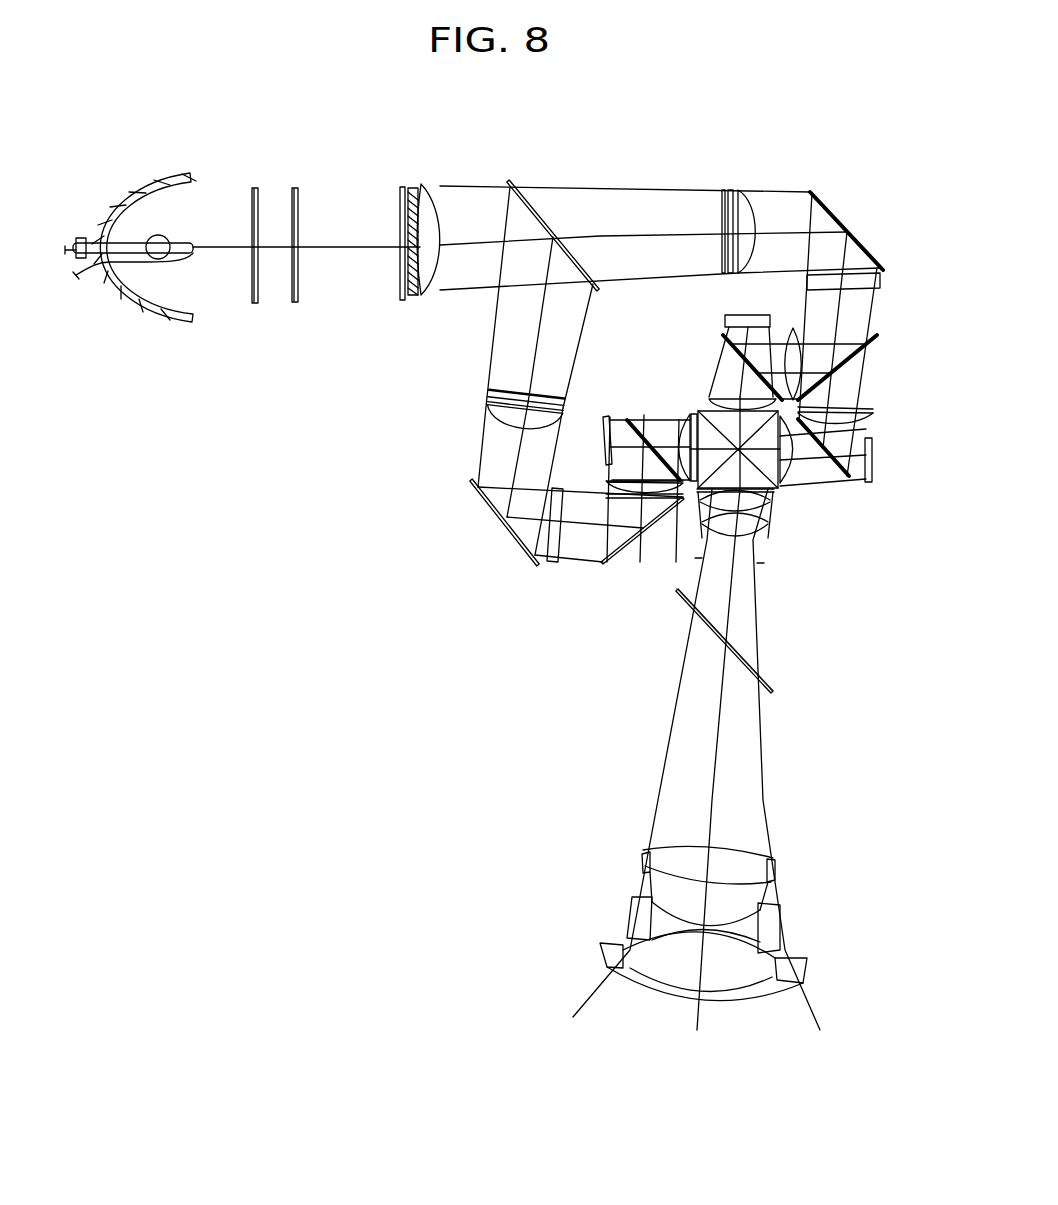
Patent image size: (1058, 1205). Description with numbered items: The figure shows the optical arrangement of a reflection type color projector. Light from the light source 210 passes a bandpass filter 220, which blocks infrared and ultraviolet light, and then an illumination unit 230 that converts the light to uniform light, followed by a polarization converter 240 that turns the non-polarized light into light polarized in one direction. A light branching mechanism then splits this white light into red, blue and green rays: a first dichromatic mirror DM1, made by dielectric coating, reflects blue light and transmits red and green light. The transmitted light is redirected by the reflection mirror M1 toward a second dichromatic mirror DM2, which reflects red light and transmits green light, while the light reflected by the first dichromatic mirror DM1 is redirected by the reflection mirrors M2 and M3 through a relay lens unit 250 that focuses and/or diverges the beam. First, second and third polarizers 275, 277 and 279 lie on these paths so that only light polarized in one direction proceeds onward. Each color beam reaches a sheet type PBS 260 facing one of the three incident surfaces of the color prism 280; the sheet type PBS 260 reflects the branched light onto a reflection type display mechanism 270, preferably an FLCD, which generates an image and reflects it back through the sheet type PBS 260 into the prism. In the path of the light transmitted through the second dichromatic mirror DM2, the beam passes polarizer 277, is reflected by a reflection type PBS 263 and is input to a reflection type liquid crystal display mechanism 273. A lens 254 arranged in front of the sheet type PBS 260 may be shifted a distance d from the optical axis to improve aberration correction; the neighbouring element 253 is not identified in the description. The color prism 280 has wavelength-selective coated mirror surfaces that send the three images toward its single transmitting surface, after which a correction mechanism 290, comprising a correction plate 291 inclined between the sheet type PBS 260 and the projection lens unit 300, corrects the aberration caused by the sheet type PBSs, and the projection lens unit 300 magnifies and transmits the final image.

The light source 210 is at (132, 183).
The bandpass filter 220 is at (253, 303).
The illumination unit 230 is at (403, 181).
The polarization converter 240 is at (417, 181).
The first dichromatic mirror DM1 is at (510, 182).
The reflection mirror M1 is at (863, 247).
The first polarizer 275 is at (800, 332).
The second dichromatic mirror DM2 is at (878, 335).
The lens 254 is at (728, 398).
The second polarizer 277 is at (876, 408).
The condenser lens 253 is at (872, 422).
The reflection type PBS 263 is at (850, 478).
The reflection type liquid crystal display mechanism 273 is at (866, 483).
The color prism 280 is at (775, 489).
The relay lens unit 250 is at (471, 411).
The reflection type display mechanism 270 is at (606, 418).
The sheet type PBS 260 is at (629, 419).
The third polarizer 279 is at (650, 520).
The reflection mirror M2 is at (513, 540).
The reflection mirror M3 is at (603, 566).
The correction plate 291 is at (763, 679).
The correction mechanism 290 is at (778, 693).
The projection lens unit 300 is at (605, 909).